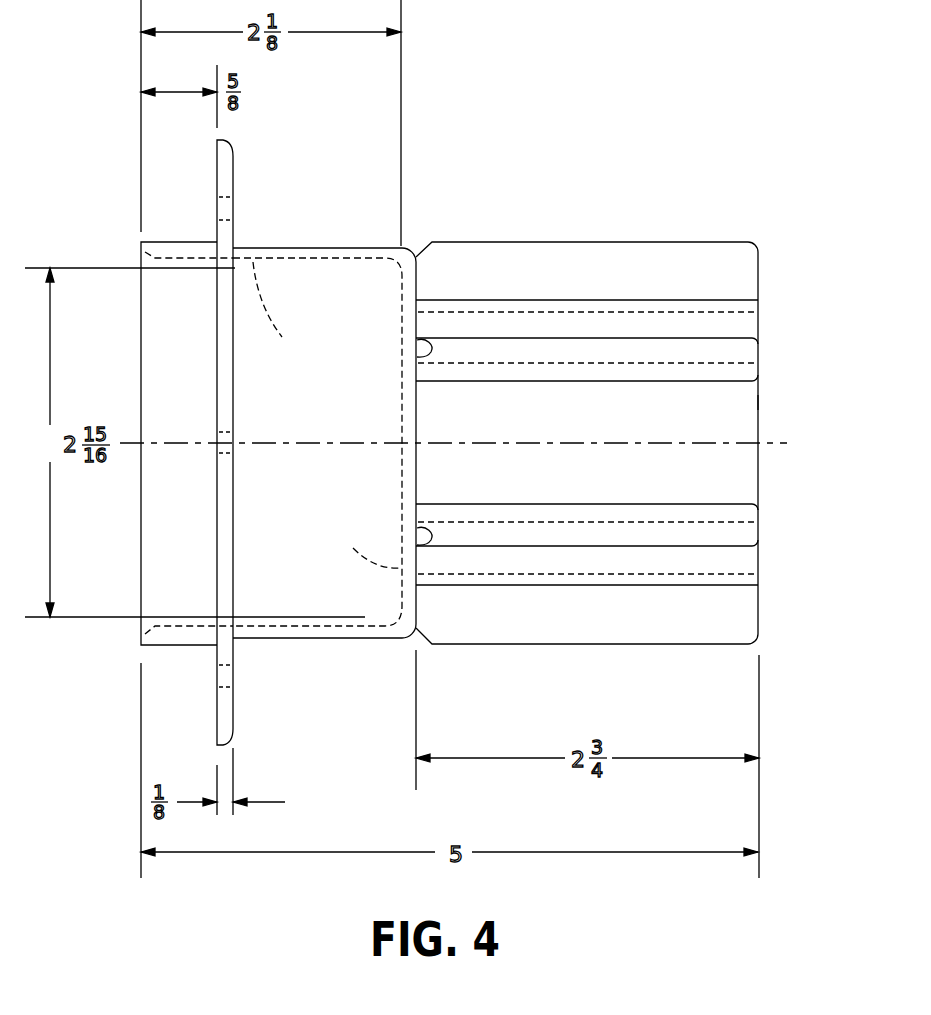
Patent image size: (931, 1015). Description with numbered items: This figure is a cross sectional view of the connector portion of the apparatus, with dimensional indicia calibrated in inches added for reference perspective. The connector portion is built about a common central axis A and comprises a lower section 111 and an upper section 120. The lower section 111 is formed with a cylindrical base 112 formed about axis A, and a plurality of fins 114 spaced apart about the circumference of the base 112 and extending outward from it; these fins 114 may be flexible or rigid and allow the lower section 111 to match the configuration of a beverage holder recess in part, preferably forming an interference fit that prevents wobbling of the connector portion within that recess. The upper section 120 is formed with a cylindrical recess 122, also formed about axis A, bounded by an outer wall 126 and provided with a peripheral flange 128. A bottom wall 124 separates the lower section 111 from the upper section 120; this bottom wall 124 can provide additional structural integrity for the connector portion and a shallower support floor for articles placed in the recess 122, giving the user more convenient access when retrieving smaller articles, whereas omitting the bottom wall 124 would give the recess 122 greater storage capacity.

The lower section 111 is at (758, 402).
The cylindrical base 112 is at (695, 300).
The fins 114 is at (527, 348).
The upper section 120 is at (165, 240).
The cylindrical recess 122 is at (286, 313).
The bottom wall 124 is at (362, 544).
The outer wall 126 is at (293, 248).
The peripheral flange 128 is at (222, 173).
The axis A is at (710, 443).